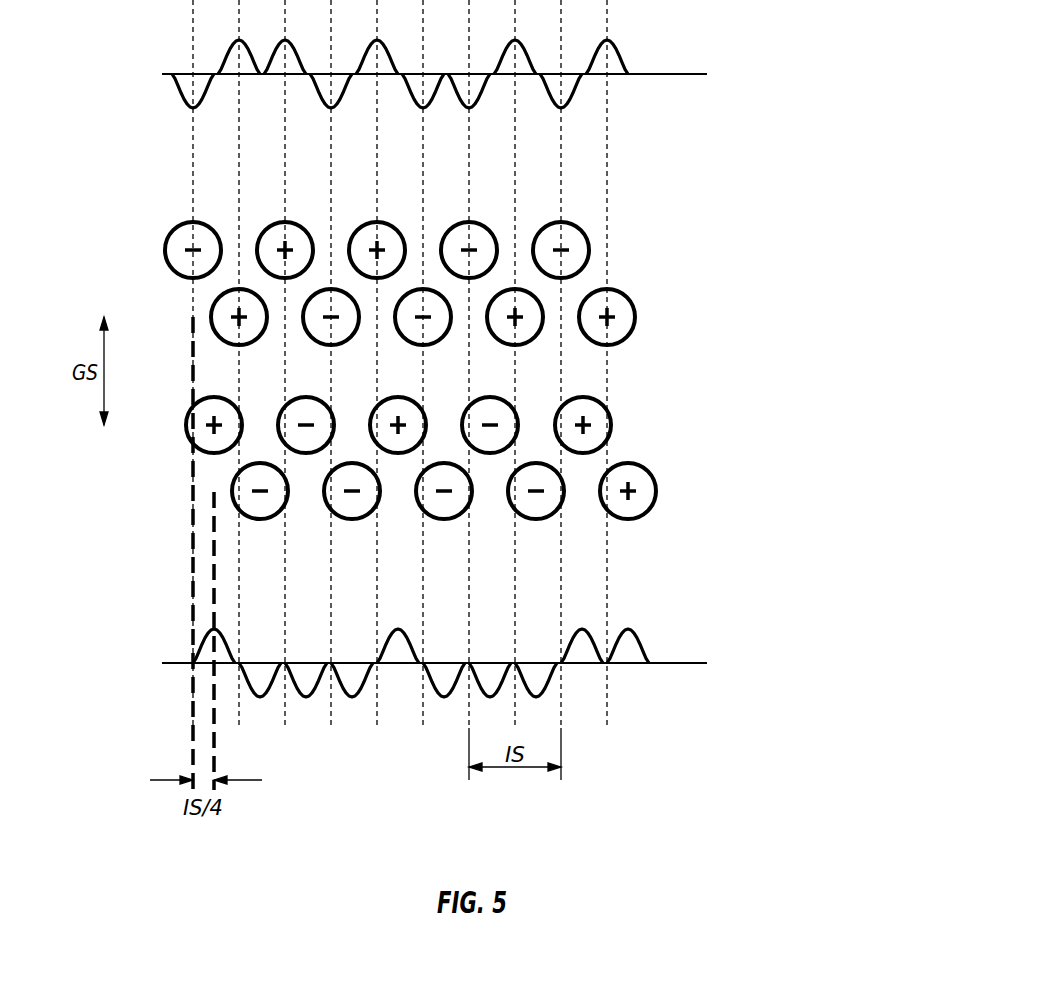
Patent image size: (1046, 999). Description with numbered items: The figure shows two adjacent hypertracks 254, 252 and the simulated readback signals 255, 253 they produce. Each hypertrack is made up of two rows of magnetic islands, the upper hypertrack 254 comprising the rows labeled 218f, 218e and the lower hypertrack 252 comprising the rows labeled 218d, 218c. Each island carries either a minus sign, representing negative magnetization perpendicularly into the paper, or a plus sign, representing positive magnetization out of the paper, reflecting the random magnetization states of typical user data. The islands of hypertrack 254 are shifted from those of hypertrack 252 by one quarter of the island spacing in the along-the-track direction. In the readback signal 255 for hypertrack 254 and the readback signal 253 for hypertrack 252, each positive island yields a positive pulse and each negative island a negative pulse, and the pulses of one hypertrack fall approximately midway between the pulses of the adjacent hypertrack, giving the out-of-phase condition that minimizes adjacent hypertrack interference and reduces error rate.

The simulated readback signal 255 is at (687, 74).
The simulated readback signal 253 is at (687, 663).
The hypertrack 254 is at (475, 283).
The hypertrack 252 is at (468, 458).
The track 218f is at (164, 251).
The track 218e is at (209, 317).
The track 218d is at (165, 425).
The track 218c is at (215, 492).